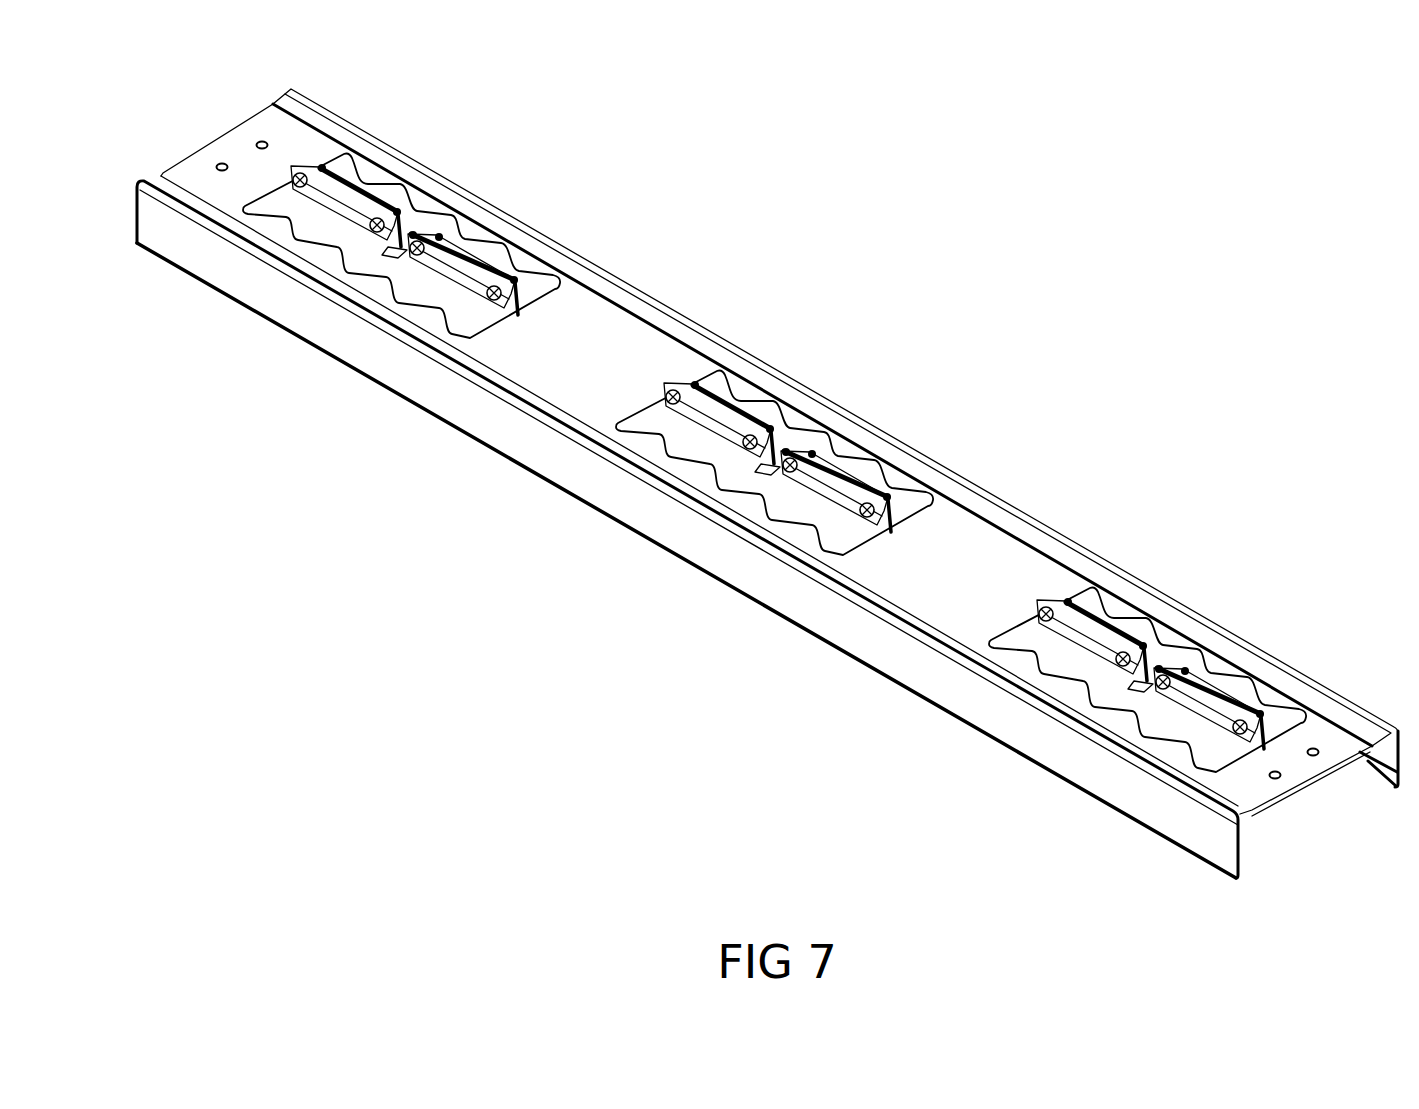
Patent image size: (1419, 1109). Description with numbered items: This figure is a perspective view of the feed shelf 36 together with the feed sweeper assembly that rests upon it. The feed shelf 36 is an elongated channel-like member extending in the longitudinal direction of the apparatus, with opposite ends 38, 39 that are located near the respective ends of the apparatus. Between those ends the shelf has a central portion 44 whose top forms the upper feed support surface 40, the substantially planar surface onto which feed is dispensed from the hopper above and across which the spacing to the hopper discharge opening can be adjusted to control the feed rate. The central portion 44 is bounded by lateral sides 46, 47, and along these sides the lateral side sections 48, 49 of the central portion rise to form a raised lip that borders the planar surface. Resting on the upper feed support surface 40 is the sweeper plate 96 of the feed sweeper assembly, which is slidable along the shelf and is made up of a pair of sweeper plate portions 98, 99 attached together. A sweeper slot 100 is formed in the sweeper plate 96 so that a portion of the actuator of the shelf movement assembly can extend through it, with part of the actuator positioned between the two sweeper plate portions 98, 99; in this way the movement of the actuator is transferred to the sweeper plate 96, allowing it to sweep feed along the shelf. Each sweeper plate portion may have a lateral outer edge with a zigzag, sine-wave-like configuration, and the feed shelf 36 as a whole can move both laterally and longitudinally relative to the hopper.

The feed shelf 36 is at (421, 478).
The end of the feed shelf 38 is at (236, 143).
The end of the feed shelf 39 is at (1290, 763).
The upper feed support surface 40 is at (587, 343).
The central portion 44 is at (985, 585).
The lateral side 46 is at (895, 610).
The lateral side 47 is at (1082, 563).
The lateral side section 48 is at (872, 595).
The lateral side section 49 is at (1113, 576).
The sweeper plate 96 is at (786, 505).
The sweeper plate portion 98 is at (698, 457).
The sweeper plate portion 99 is at (758, 408).
The sweeper slot 100 is at (385, 257).